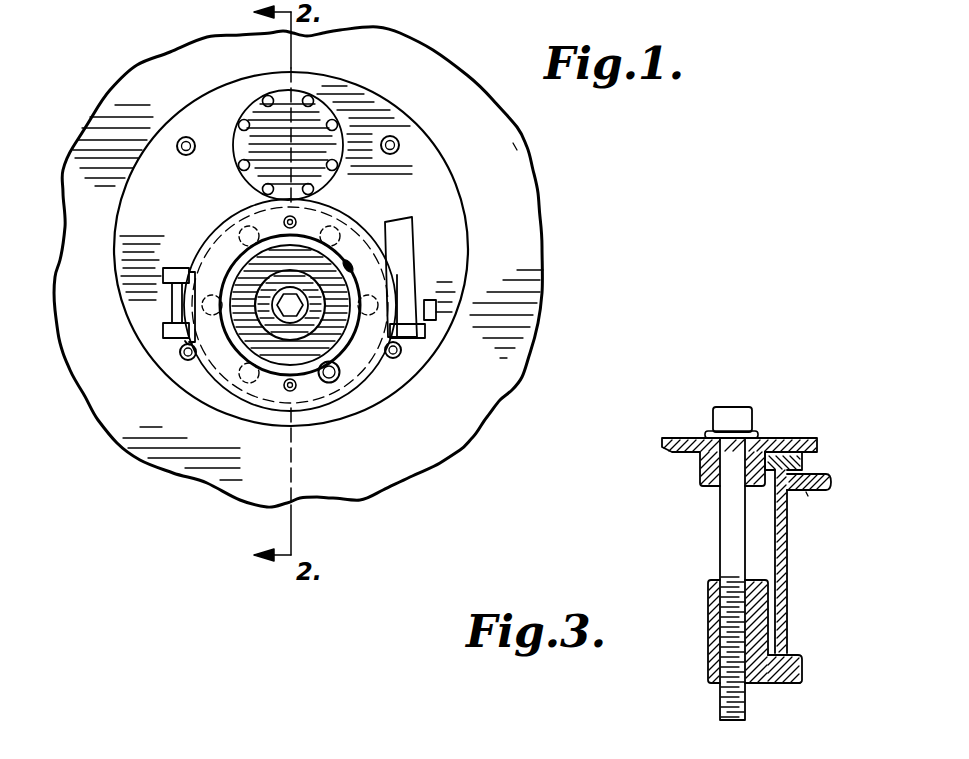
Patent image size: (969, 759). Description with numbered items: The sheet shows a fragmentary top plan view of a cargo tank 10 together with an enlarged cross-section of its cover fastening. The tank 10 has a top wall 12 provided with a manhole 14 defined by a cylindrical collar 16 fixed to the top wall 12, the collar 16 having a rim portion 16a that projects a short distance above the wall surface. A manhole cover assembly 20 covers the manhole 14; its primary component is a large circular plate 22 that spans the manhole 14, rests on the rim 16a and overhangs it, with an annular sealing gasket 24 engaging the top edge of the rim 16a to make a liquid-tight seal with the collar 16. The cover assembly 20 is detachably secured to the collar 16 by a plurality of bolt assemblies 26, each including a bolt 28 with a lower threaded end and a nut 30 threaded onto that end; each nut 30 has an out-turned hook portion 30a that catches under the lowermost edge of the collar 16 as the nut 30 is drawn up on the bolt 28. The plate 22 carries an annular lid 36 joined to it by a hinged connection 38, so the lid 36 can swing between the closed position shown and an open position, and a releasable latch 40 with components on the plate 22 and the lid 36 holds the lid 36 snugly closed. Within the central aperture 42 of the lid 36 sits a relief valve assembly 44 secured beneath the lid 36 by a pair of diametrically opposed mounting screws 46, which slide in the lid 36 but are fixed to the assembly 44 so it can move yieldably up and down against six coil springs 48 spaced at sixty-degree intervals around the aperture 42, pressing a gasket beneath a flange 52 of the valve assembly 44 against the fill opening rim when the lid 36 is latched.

In FIG. 1, the cargo tank 10 is at (440, 42).
In FIG. 1, the top wall 12 is at (515, 142).
In FIG. 3, the top wall 12 is at (806, 496).
In FIG. 1, the manhole cover assembly 20 is at (450, 147).
In FIG. 3, the manhole cover assembly 20 is at (785, 408).
In FIG. 1, the circular plate 22 is at (455, 267).
In FIG. 3, the circular plate 22 is at (678, 436).
In FIG. 3, the annular sealing gasket 24 is at (790, 447).
In FIG. 1, the bolt assemblies 26 is at (189, 157).
In FIG. 3, the bolt assemblies 26 is at (708, 535).
In FIG. 3, the bolt 28 is at (727, 565).
In FIG. 3, the nut 30 is at (710, 664).
In FIG. 3, the out-turned hook portion 30a is at (800, 670).
In FIG. 3, the manhole 14 is at (760, 541).
In FIG. 3, the cylindrical collar 16 is at (786, 614).
In FIG. 3, the rim portion 16a is at (829, 481).
In FIG. 1, the lid 36 is at (313, 398).
In FIG. 1, the hinged connection 38 is at (166, 300).
In FIG. 1, the releasable latch 40 is at (403, 236).
In FIG. 1, the central aperture 42 is at (350, 262).
In FIG. 1, the relief valve assembly 44 is at (283, 373).
In FIG. 1, the mounting screws 46 is at (290, 216).
In FIG. 1, the coil springs 48 is at (329, 380).
In FIG. 1, the flange 52 is at (205, 241).